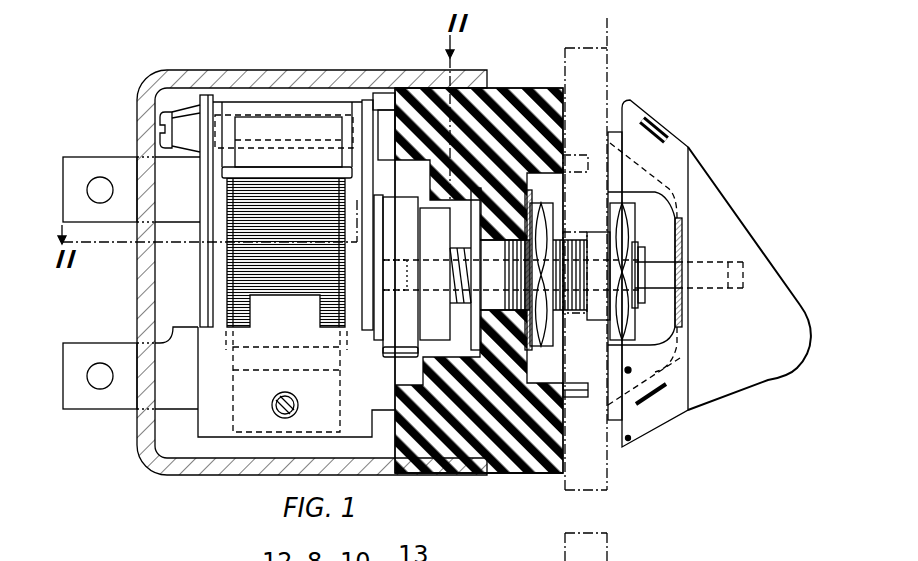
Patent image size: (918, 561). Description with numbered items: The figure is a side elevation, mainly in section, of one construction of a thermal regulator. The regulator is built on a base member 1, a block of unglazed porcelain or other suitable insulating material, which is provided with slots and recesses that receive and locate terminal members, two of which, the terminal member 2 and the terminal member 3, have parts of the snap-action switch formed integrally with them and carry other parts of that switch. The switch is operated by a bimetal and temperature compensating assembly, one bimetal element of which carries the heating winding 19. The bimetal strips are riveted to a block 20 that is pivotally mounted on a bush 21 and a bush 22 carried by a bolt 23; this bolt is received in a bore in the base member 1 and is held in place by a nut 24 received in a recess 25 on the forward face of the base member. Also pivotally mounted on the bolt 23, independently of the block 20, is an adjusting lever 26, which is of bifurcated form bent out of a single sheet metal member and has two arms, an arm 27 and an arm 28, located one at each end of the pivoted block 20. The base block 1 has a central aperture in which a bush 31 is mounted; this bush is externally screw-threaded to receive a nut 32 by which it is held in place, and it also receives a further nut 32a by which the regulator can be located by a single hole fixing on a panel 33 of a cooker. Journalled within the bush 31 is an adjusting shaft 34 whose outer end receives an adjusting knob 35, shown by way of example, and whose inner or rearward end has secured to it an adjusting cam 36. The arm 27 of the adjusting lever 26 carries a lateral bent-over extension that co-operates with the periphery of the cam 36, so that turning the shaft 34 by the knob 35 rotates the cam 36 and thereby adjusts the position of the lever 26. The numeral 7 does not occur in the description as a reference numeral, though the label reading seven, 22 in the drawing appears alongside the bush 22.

The base member 1 is at (499, 87).
The terminal member 2 is at (109, 402).
The terminal member 3 is at (82, 163).
The yoke 7 is at (396, 75).
The bush 22 is at (330, 120).
The heating winding 19 is at (233, 289).
The block 20 is at (232, 112).
The bush 21 is at (255, 113).
The bolt 23 is at (170, 110).
The nut 24 is at (524, 87).
The recess 25 is at (607, 88).
The adjusting lever 26 is at (213, 428).
The arm 27 is at (373, 191).
The arm 28 is at (199, 247).
The bush 31 is at (503, 470).
The nut 32 is at (545, 330).
The further nut 32a is at (620, 325).
The panel 33 is at (612, 62).
The adjusting shaft 34 is at (665, 275).
The adjusting knob 35 is at (760, 351).
The adjusting cam 36 is at (395, 337).